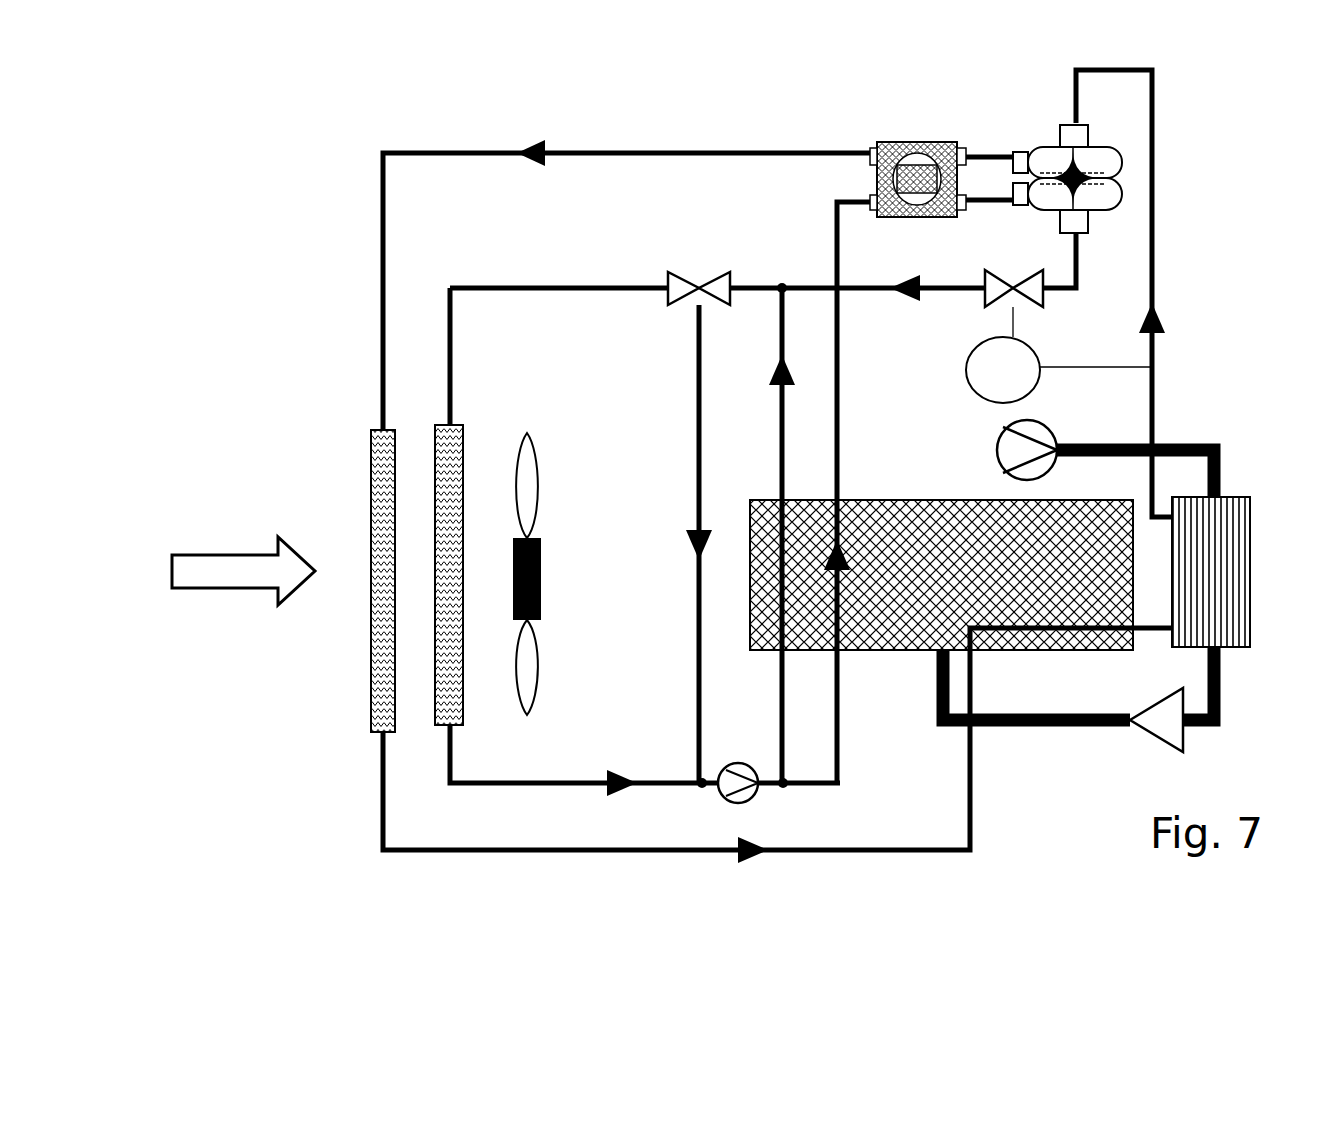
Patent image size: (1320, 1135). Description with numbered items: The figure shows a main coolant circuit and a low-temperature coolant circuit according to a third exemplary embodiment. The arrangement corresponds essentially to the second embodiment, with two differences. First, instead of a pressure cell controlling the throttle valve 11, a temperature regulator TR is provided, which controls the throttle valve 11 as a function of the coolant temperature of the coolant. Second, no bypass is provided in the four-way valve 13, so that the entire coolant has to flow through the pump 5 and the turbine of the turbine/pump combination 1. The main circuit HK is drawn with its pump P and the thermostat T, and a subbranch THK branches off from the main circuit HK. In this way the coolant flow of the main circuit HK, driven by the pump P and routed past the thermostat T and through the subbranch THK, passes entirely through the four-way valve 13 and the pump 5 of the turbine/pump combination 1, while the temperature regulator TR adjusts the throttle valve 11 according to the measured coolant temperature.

The turbine/pump combination 1 is at (1140, 158).
The pump 5 is at (1043, 153).
The throttle valve 11 is at (1043, 280).
The 4-way valve 13 is at (878, 181).
The thermostat T is at (697, 250).
The temperature regulator TR is at (968, 385).
The pump P is at (733, 788).
The main circuit HK is at (776, 790).
The subbranch THK is at (840, 745).